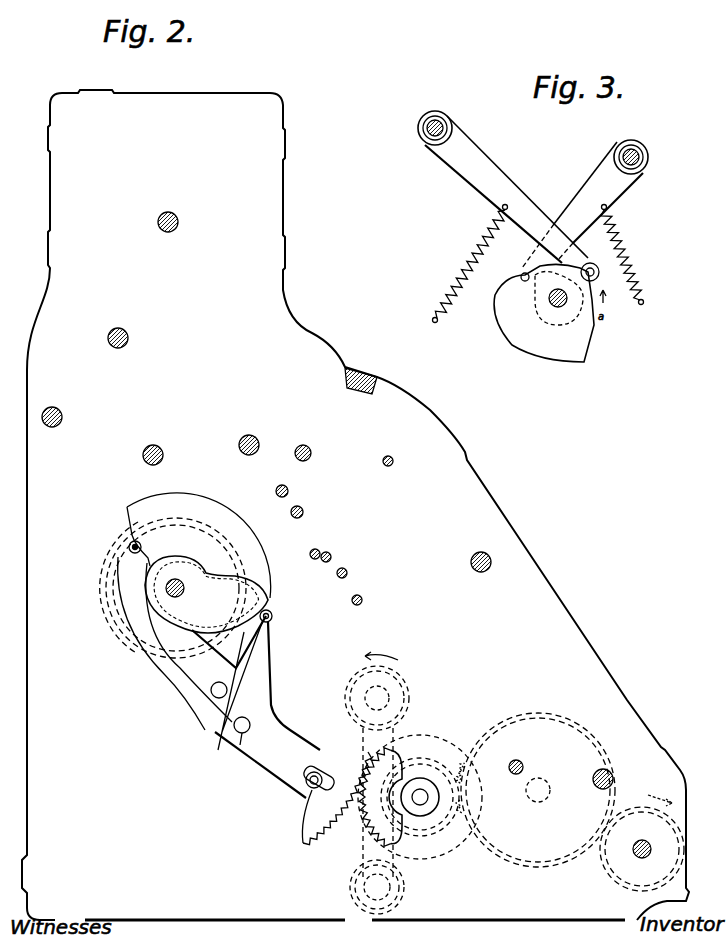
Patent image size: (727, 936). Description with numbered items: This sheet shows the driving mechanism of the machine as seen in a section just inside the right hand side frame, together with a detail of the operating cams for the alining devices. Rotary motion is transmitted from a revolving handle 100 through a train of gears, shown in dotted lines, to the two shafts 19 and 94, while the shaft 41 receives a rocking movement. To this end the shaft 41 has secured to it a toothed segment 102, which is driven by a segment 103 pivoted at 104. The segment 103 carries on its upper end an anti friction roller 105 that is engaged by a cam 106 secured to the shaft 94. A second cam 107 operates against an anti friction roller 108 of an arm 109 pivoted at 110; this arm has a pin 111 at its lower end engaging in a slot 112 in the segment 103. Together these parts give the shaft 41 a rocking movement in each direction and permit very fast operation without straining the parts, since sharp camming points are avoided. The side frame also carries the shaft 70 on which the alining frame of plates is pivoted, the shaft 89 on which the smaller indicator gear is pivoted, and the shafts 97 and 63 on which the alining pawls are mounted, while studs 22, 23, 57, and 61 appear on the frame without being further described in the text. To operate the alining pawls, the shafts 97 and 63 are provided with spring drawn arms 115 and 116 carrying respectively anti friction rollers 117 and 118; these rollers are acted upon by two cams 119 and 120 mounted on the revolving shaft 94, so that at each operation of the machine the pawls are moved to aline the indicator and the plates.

In FIG. 2, the shaft 19 is at (644, 858).
In FIG. 2, the stud 22 is at (310, 456).
In FIG. 2, the stud 23 is at (522, 765).
In FIG. 2, the shaft 41 is at (420, 795).
In FIG. 2, the stud 57 is at (388, 466).
In FIG. 2, the studs 61 is at (288, 493).
In FIG. 2, the shaft 63 is at (258, 443).
In FIG. 3, the shaft 63 is at (639, 158).
In FIG. 2, the shaft 70 is at (162, 452).
In FIG. 2, the shaft 89 is at (128, 338).
In FIG. 2, the shaft 94 is at (184, 590).
In FIG. 3, the shaft 94 is at (558, 308).
In FIG. 2, the shaft 97 is at (62, 418).
In FIG. 3, the shaft 97 is at (443, 128).
In FIG. 2, the revolving handle 100 is at (352, 896).
In FIG. 2, the toothed segment 102 is at (372, 828).
In FIG. 2, the segment 103 is at (303, 841).
In FIG. 2, the pivot 104 is at (235, 730).
In FIG. 2, the anti friction roller 105 is at (272, 615).
In FIG. 2, the cam 106 is at (255, 598).
In FIG. 2, the cam 107 is at (205, 498).
In FIG. 2, the anti friction roller 108 is at (129, 547).
In FIG. 2, the arm 109 is at (188, 690).
In FIG. 2, the pivot 110 is at (212, 695).
In FIG. 2, the pin 111 is at (298, 795).
In FIG. 2, the slot 112 is at (312, 795).
In FIG. 3, the spring drawn arm 115 is at (478, 191).
In FIG. 3, the spring drawn arm 116 is at (628, 196).
In FIG. 3, the anti friction roller 117 is at (521, 278).
In FIG. 3, the anti friction roller 118 is at (592, 264).
In FIG. 3, the cam 119 is at (585, 343).
In FIG. 3, the cam 120 is at (540, 315).